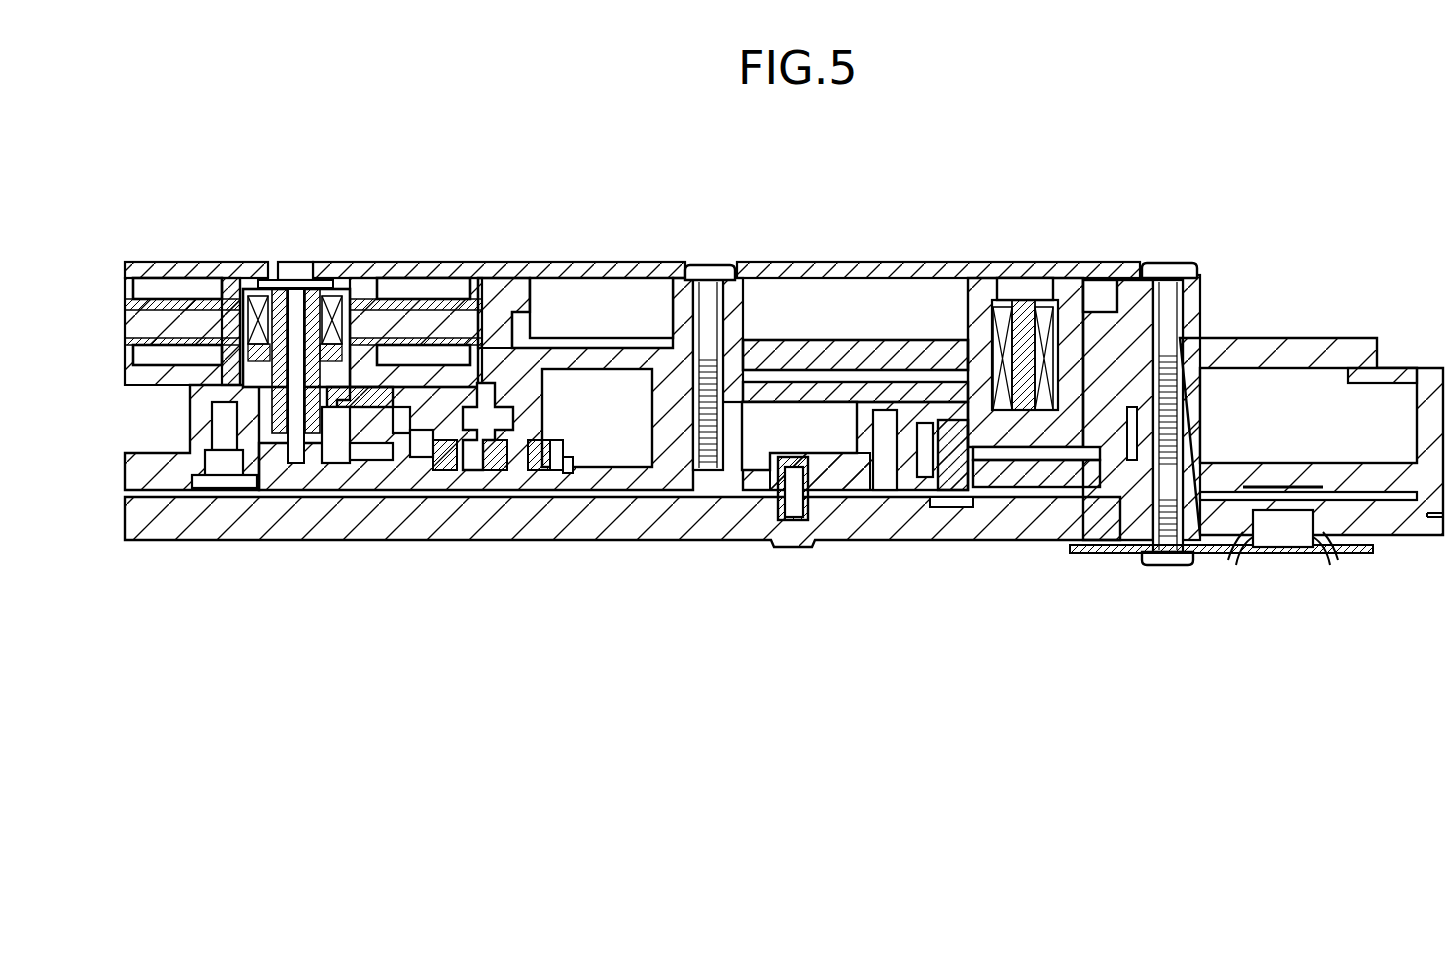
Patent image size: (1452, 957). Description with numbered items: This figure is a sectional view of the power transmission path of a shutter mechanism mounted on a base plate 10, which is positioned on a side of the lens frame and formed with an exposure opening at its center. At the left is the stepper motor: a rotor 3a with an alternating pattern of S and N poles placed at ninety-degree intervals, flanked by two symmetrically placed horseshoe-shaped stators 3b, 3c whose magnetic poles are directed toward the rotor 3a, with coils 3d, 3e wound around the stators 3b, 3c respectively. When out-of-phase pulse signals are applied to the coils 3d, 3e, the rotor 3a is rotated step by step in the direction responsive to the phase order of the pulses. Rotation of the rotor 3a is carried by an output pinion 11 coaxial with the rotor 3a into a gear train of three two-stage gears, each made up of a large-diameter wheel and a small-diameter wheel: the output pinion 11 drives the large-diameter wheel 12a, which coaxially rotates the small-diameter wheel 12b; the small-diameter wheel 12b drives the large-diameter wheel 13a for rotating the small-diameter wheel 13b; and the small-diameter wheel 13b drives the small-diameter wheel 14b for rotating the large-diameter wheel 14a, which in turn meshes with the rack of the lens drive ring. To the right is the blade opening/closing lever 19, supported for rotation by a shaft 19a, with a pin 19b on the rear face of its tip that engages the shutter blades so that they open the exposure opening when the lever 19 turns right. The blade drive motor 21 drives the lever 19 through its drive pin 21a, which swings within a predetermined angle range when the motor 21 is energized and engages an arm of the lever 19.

The rotor 3a is at (299, 260).
The stator 3b is at (235, 300).
The stator 3c is at (477, 288).
The coil 3d is at (170, 283).
The coil 3e is at (416, 292).
The base plate 10 is at (153, 540).
The output pinion 11 is at (263, 453).
The large-diameter wheel 12a is at (333, 410).
The small-diameter wheel 12b is at (347, 427).
The large-diameter wheel 13a is at (407, 453).
The small-diameter wheel 13b is at (428, 470).
The large-diameter wheel 14a is at (570, 463).
The small-diameter wheel 14b is at (563, 440).
The blade opening/closing lever 19 is at (801, 452).
The shaft 19a is at (886, 388).
The pin 19b is at (790, 520).
The blade drive motor 21 is at (1025, 275).
The drive pin 21a is at (948, 495).